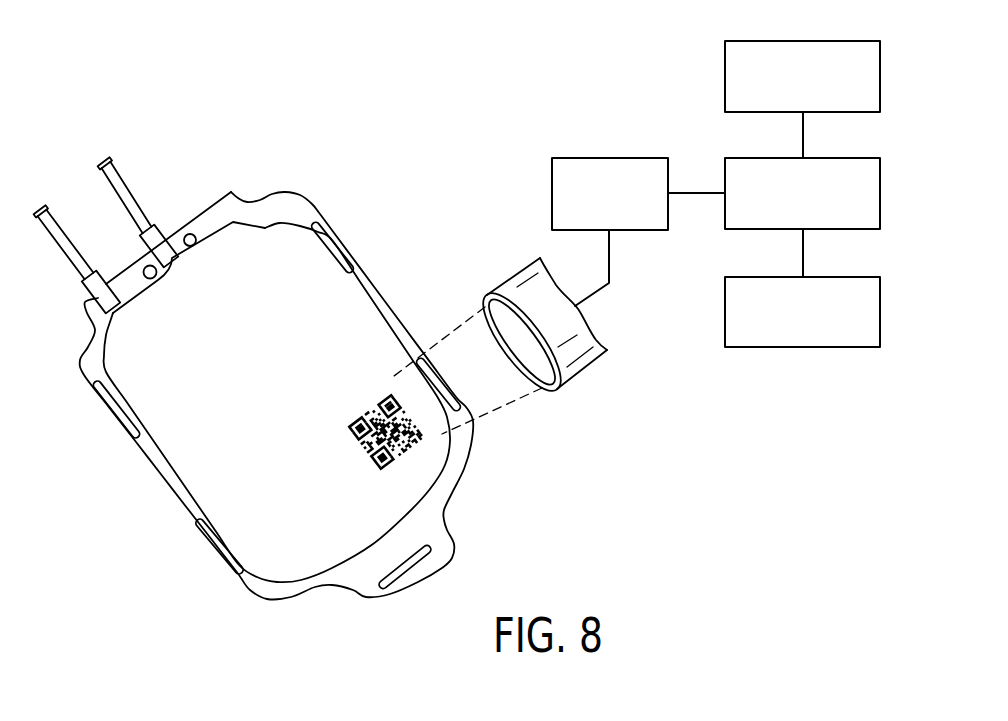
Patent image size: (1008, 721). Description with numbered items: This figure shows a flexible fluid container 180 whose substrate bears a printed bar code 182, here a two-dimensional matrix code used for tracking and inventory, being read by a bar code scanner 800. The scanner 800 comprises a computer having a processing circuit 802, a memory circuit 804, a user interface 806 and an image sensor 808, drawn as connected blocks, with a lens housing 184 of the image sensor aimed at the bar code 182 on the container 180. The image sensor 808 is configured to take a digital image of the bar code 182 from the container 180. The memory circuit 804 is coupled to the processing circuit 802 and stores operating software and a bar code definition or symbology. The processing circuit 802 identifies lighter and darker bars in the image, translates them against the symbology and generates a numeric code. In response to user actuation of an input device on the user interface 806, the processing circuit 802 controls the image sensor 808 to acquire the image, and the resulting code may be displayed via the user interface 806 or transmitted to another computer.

The container 180 is at (293, 280).
The bar code 182 is at (417, 452).
The image sensor lens housing 184 is at (547, 310).
The bar code scanner 800 is at (721, 173).
The processing circuit 802 is at (828, 158).
The memory circuit 804 is at (828, 277).
The user interface 806 is at (828, 41).
The image sensor 808 is at (610, 158).